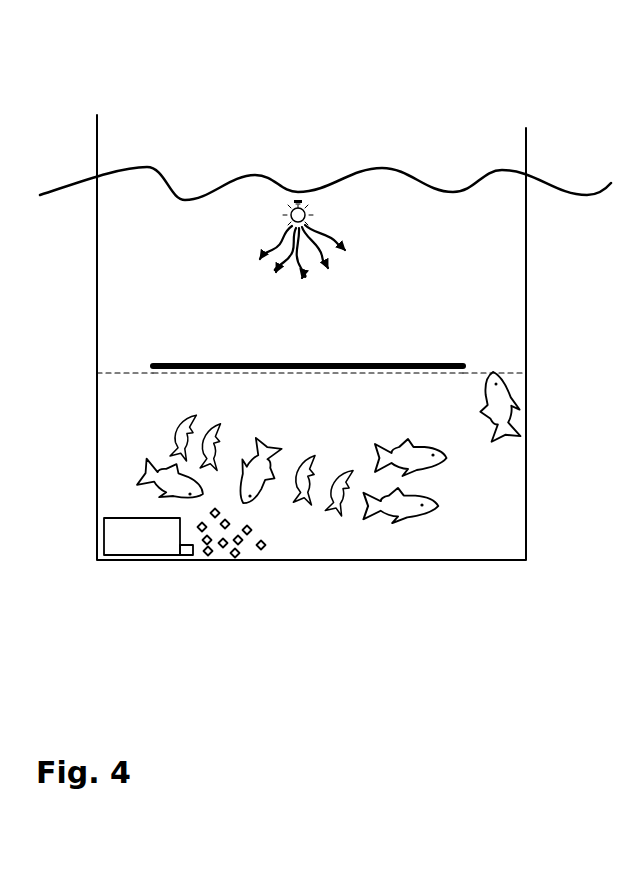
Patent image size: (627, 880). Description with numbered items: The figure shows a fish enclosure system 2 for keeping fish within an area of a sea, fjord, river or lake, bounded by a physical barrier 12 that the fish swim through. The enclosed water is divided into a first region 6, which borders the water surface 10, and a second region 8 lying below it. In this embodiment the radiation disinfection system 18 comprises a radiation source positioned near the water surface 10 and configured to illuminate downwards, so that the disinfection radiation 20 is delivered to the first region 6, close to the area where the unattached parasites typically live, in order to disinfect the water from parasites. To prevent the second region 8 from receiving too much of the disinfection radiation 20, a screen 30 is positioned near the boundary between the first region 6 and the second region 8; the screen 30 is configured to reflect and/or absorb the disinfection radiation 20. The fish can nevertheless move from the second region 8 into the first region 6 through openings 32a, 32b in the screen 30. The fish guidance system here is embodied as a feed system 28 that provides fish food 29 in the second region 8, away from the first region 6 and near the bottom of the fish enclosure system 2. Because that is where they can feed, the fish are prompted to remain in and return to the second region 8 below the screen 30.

The fish enclosure system 2 is at (311, 58).
The physical barrier 12 is at (97, 133).
The water surface 10 is at (254, 176).
The first region 6 is at (112, 205).
The second region 8 is at (110, 395).
The radiation disinfection system 18 is at (310, 208).
The disinfection radiation 20 is at (335, 260).
The screen 30 is at (190, 364).
The opening 32a is at (118, 368).
The opening 32b is at (500, 368).
The feed system 28 is at (112, 530).
The fish food 29 is at (265, 535).